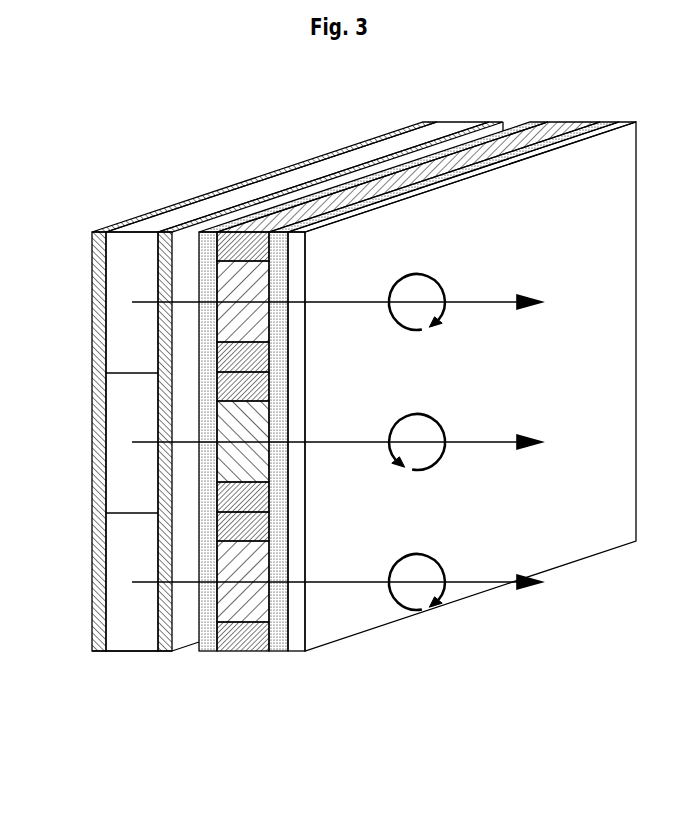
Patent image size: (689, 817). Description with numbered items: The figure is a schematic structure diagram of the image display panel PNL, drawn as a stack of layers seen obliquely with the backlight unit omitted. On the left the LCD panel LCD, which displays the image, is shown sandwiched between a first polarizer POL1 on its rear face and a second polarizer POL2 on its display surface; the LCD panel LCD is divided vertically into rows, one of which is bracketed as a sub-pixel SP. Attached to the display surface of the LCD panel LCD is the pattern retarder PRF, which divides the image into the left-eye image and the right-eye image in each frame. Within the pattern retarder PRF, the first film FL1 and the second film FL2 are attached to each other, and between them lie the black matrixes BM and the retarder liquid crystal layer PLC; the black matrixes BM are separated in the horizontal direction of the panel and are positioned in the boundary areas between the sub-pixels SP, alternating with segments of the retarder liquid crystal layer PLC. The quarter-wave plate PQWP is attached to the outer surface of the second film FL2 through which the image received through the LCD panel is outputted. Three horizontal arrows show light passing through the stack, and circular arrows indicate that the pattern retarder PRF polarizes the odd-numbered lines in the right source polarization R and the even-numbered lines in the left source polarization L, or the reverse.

The image display panel PNL is at (278, 124).
The first polarizer POL1 is at (105, 228).
The LCD panel LCD is at (150, 230).
The second polarizer POL2 is at (190, 225).
The sub-pixel SP is at (80, 232).
The pattern retarder PRF is at (358, 730).
The first film FL1 is at (207, 642).
The black matrix BM is at (232, 642).
The retarder liquid crystal layer PLC is at (253, 617).
The second film FL2 is at (280, 642).
The λ/4 plate PQWP is at (297, 640).
The right source polarization R is at (424, 443).
The left source polarization L is at (424, 443).